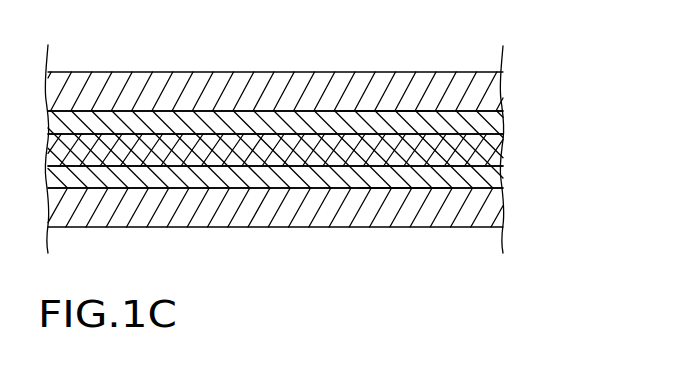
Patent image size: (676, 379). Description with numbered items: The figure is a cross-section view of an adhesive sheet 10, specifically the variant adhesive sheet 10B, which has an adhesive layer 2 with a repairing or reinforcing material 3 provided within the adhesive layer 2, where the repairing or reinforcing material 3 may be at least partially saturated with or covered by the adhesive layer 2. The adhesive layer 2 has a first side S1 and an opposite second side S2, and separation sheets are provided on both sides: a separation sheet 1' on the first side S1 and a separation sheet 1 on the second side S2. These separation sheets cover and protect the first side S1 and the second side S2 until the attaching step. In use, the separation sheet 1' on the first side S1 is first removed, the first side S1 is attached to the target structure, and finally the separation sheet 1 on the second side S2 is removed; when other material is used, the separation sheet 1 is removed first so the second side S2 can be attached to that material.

The adhesive sheet 10 is at (310, 290).
The adhesive sheet 10B is at (274, 167).
The separation sheet 1 is at (300, 91).
The separation sheet 1' is at (302, 210).
The adhesive layer 2 is at (551, 111).
The repairing or reinforcing material 3 is at (497, 148).
The first side S1 is at (400, 188).
The second side S2 is at (385, 111).